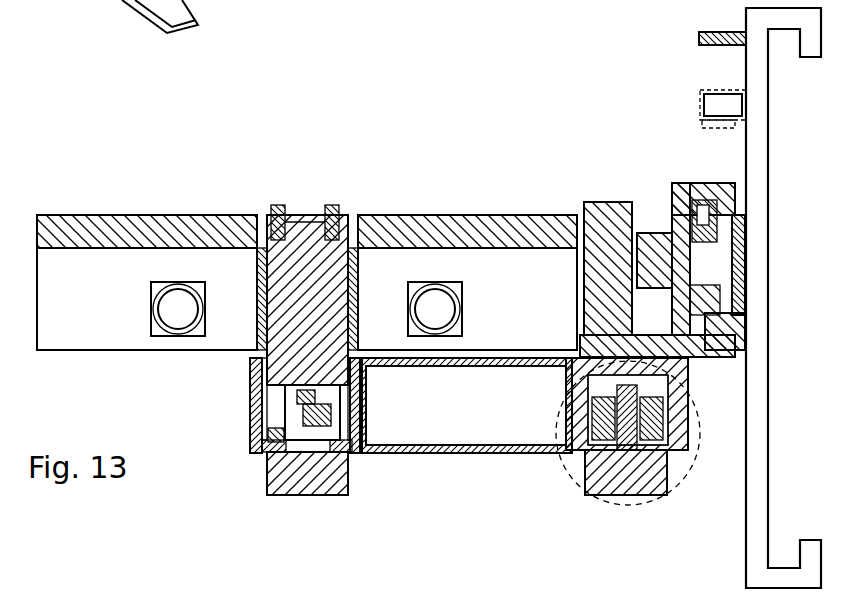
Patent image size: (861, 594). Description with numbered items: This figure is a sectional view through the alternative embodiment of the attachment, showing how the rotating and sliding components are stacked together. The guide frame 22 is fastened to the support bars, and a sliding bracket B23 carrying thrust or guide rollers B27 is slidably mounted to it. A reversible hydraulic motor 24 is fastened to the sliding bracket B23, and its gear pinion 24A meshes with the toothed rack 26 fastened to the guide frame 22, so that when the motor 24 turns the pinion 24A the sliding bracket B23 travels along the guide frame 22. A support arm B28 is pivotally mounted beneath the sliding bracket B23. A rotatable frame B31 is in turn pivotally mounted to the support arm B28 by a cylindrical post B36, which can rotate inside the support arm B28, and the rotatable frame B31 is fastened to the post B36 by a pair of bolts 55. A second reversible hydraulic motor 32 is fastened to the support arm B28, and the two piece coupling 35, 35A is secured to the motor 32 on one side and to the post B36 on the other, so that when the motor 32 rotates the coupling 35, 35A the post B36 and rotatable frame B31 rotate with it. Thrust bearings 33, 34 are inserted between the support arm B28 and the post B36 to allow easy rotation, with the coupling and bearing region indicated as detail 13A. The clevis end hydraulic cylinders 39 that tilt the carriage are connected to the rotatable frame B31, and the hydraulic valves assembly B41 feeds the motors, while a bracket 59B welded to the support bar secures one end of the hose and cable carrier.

The bracket 59B is at (727, 32).
The thrust or guide rollers B27 is at (700, 182).
The bolts 55 is at (330, 205).
The cylindrical post B36 is at (345, 245).
The clevis end hydraulic cylinders 39 is at (173, 335).
The rotatable frame B31 is at (500, 225).
The hydraulic valves assembly B41 is at (602, 206).
The reversible hydraulic motor 24 is at (646, 232).
The toothed rack 26 is at (745, 226).
The guide frame 22 is at (742, 264).
The gear pinion 24A is at (705, 280).
The sliding bracket B23 is at (728, 320).
The two piece coupling 35A is at (292, 399).
The two piece coupling 35 is at (300, 420).
The thrust bearing 34 is at (268, 437).
The thrust bearing 33 is at (270, 452).
The reversible hydraulic motor 32 is at (292, 492).
The support arm B28 is at (452, 452).
The detail region 13A is at (622, 508).